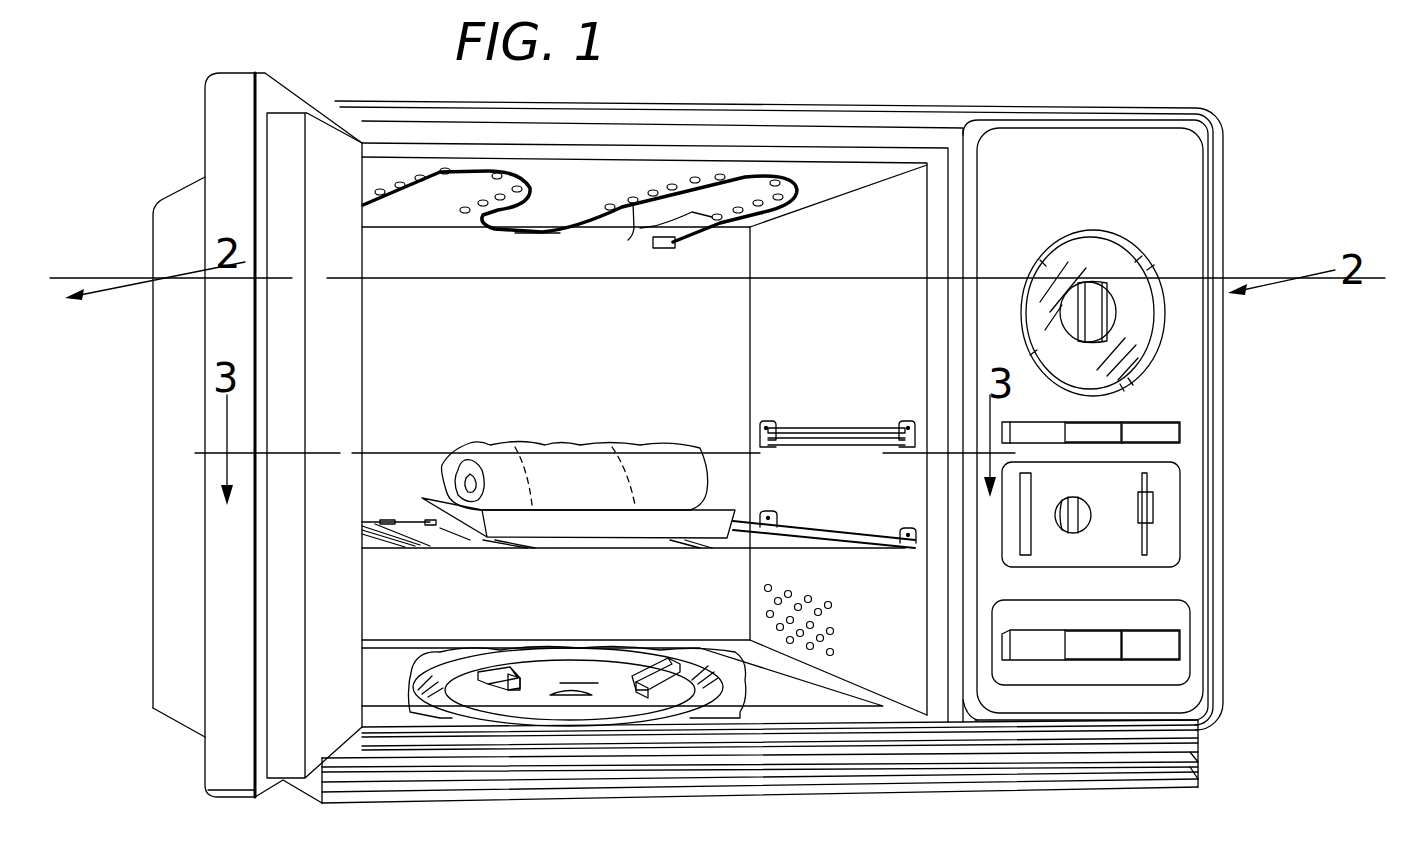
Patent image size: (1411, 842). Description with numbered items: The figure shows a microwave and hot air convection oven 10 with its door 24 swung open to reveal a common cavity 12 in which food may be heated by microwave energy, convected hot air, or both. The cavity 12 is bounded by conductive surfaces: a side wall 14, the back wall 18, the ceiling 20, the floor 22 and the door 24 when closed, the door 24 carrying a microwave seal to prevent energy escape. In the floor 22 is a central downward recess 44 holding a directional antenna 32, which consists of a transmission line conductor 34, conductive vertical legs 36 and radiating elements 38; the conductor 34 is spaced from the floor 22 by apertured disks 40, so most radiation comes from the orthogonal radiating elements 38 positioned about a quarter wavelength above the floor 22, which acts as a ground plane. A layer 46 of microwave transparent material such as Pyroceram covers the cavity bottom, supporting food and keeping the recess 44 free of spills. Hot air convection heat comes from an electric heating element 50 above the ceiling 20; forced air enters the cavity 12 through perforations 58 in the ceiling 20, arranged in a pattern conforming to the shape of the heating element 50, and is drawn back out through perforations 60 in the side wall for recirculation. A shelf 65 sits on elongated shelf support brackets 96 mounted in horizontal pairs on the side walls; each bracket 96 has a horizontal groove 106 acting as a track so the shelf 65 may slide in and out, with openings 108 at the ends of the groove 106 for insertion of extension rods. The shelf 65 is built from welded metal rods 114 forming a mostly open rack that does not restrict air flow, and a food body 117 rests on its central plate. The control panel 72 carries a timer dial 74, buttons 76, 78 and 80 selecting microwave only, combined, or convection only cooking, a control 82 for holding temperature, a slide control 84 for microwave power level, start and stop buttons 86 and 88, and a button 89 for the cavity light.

The microwave and hot air convection oven 10 is at (818, 100).
The cavity 12 is at (557, 345).
The side wall 14 is at (750, 372).
The back wall 18 is at (735, 573).
The ceiling 20 is at (432, 207).
The floor 22 is at (403, 698).
The door 24 is at (297, 90).
The directional antenna 32 is at (573, 662).
The transmission line conductor 34 is at (602, 683).
The conductive vertical legs 36 is at (513, 689).
The radiating elements 38 is at (660, 668).
The apertured disks 40 is at (590, 698).
The recess 44 is at (543, 721).
The layer of microwave transparent material 46 is at (719, 658).
The electric heating element 50 is at (523, 234).
The perforations 58 is at (632, 230).
The perforations 60 is at (830, 632).
The shelf 65 is at (408, 514).
The control panel 72 is at (1182, 242).
The dial 74 is at (1128, 247).
The button 76 is at (1043, 433).
The button 78 is at (1098, 433).
The button 80 is at (1153, 433).
The control 82 is at (1054, 508).
The slide control 84 is at (1136, 505).
The button 86 is at (1037, 647).
The button 88 is at (1094, 647).
The button 89 is at (1152, 647).
The shelf support brackets 96 is at (843, 428).
The groove 106 is at (825, 446).
The openings 108 is at (782, 428).
The metal rods 114 is at (512, 542).
The food body 117 is at (567, 443).